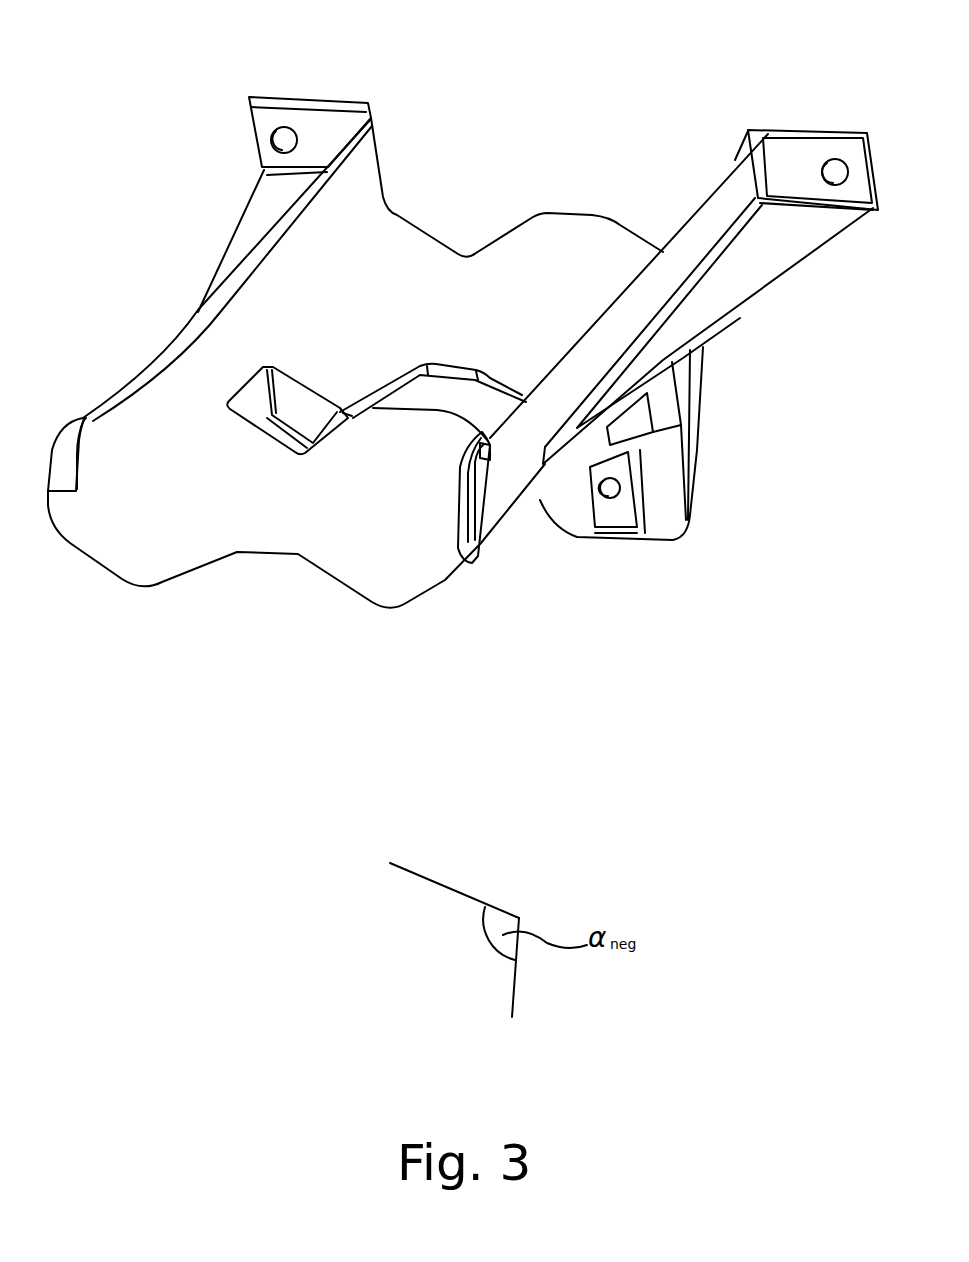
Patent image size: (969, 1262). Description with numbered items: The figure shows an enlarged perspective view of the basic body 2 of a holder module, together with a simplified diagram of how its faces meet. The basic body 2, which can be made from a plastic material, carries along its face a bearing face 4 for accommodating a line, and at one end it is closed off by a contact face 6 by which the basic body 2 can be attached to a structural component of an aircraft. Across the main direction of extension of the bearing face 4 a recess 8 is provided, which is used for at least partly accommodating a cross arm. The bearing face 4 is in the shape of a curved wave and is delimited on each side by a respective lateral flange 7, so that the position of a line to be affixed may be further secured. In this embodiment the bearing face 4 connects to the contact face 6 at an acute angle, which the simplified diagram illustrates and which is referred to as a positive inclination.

In FIG. 3, the basic body 2 is at (147, 299).
In FIG. 3A, the basic body 2 is at (430, 880).
In FIG. 3, the bearing face 4 is at (170, 555).
In FIG. 3, the contact face 6 is at (323, 98).
In FIG. 3A, the contact face 6 is at (515, 978).
In FIG. 3, the lateral flange 7 is at (487, 543).
In FIG. 3, the recess 8 is at (450, 400).